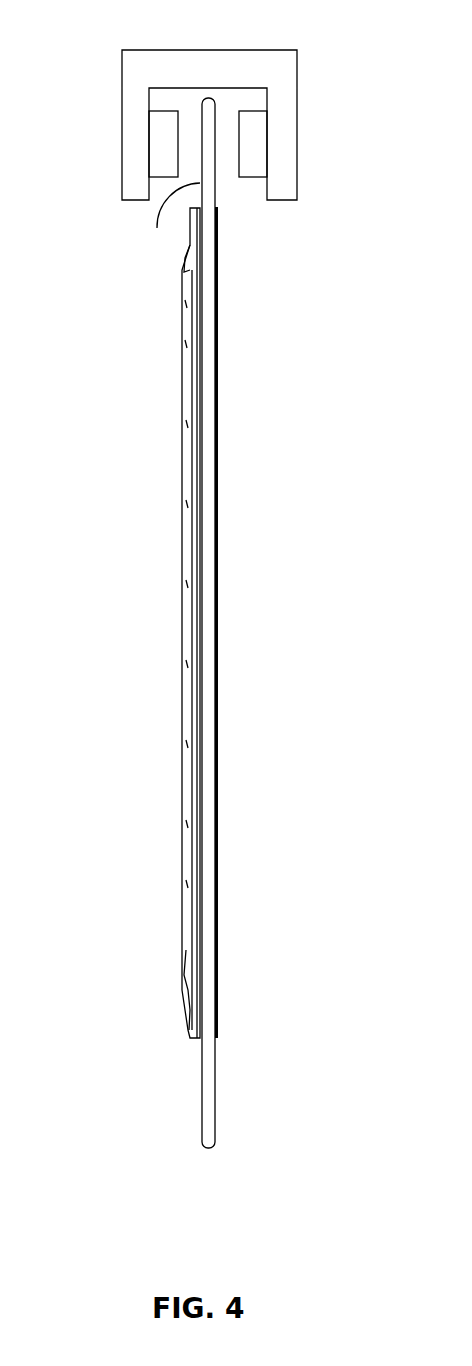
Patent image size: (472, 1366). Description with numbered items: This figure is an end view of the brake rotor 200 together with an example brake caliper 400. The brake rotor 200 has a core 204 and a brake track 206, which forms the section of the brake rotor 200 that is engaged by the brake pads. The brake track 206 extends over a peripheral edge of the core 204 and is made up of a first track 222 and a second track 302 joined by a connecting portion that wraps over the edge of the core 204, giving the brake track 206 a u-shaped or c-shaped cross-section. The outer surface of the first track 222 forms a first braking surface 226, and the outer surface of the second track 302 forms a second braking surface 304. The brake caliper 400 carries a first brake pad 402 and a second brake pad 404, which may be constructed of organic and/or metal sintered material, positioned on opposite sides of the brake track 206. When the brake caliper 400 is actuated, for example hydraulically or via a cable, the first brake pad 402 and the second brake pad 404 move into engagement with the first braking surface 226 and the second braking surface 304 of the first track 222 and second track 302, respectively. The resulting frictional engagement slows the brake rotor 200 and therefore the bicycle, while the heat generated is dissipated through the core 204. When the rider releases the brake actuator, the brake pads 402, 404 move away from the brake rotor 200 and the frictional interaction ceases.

The brake caliper 400 is at (135, 73).
The first brake pad 402 is at (252, 143).
The second brake pad 404 is at (162, 147).
The brake rotor 200 is at (96, 290).
The core 204 is at (185, 415).
The brake track 206 is at (210, 117).
The first track 222 is at (264, 610).
The first braking surface 226 is at (214, 183).
The second track 302 is at (145, 220).
The second braking surface 304 is at (145, 220).